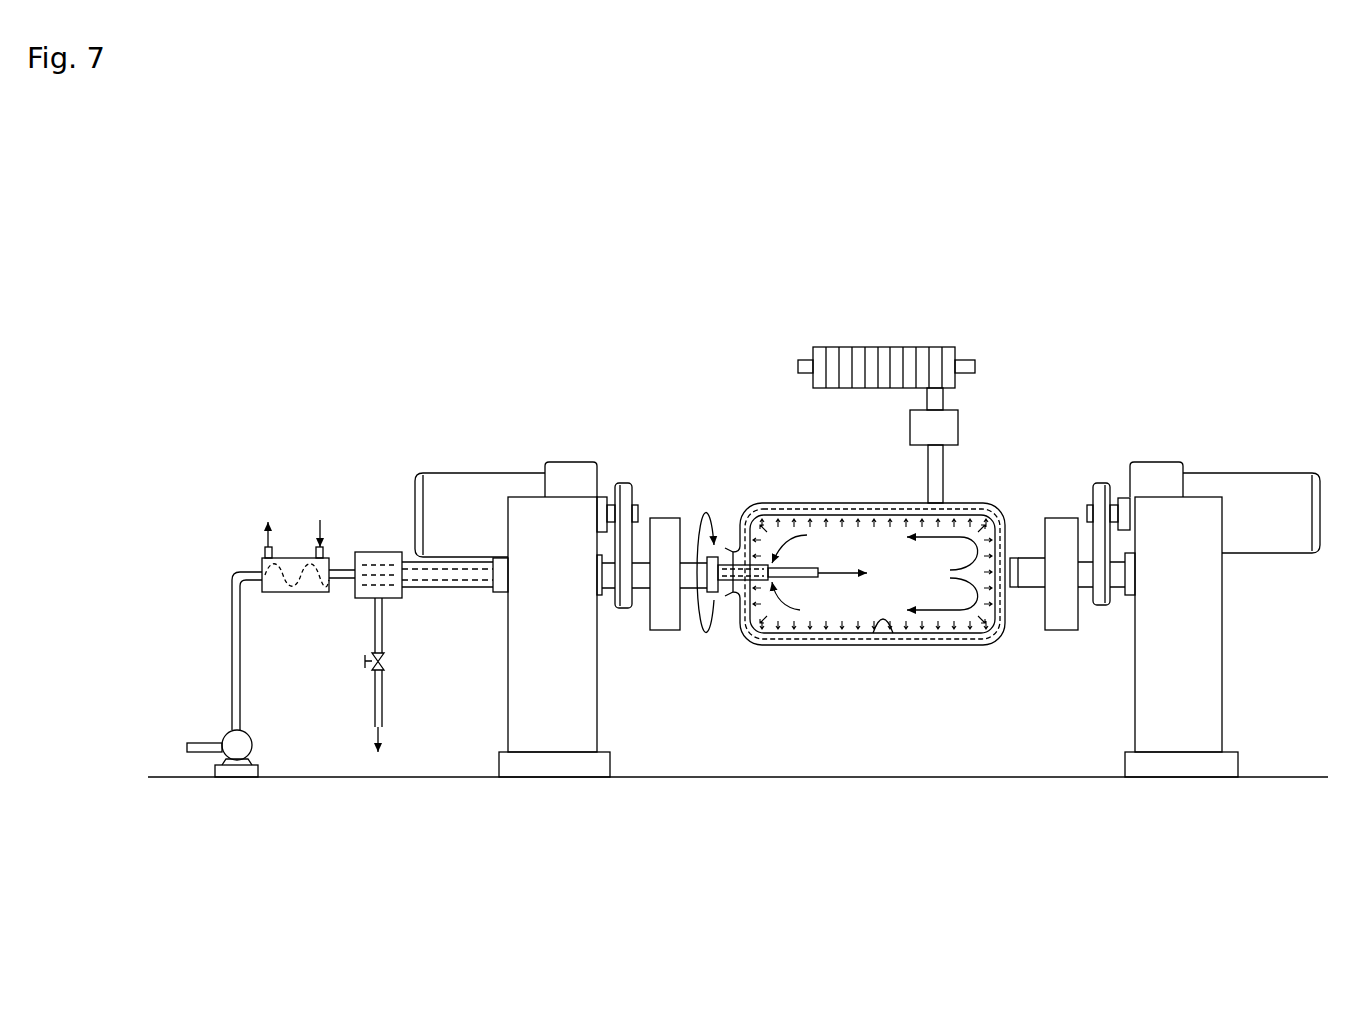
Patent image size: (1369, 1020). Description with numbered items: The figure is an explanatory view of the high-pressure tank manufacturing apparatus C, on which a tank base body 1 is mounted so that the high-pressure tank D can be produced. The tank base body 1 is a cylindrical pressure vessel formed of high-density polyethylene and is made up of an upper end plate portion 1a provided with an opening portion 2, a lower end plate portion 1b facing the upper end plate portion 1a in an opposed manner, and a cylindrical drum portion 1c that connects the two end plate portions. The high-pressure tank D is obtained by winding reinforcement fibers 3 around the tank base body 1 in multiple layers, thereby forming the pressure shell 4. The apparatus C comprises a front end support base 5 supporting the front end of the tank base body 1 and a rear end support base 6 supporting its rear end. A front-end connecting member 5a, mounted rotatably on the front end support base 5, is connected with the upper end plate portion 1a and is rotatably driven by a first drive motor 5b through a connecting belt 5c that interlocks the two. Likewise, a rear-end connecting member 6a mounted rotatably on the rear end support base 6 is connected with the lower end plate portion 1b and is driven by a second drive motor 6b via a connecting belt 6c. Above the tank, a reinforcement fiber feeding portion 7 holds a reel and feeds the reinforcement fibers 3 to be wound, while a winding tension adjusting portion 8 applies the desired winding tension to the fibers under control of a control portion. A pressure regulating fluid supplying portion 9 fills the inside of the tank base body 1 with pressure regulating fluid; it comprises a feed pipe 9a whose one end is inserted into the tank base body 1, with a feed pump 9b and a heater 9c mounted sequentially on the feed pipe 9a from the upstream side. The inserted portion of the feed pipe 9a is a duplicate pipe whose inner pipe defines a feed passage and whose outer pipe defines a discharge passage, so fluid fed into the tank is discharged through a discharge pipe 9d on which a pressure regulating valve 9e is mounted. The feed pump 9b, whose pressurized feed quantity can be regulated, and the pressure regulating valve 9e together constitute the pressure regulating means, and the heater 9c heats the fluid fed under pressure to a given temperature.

The tank base body 1 is at (760, 503).
The upper end plate portion 1a is at (735, 594).
The lower end plate portion 1b is at (1010, 597).
The cylindrical drum portion 1c is at (887, 615).
The opening portion 2 is at (718, 594).
The reinforcement fibers 3 is at (937, 473).
The pressure shell 4 is at (810, 503).
The front end support base 5 is at (570, 648).
The front-end connecting member 5a is at (665, 623).
The first drive motor 5b is at (458, 490).
The connecting belt 5c is at (620, 483).
The rear end support base 6 is at (1158, 648).
The rear-end connecting member 6a is at (1063, 618).
The second drive motor 6b is at (1260, 485).
The connecting belt 6c is at (1107, 480).
The reinforcement fiber feeding portion 7 is at (942, 332).
The winding tension adjusting portion 8 is at (950, 425).
The pressure regulating fluid supplying portion 9 is at (218, 512).
The feed pipe 9a is at (762, 583).
The feed pump 9b is at (240, 745).
The heater 9c is at (300, 592).
The discharge pipe 9d is at (415, 662).
The pressure regulating valve 9e is at (383, 628).
The high-pressure tank manufacturing apparatus C is at (488, 387).
The high-pressure tank D is at (742, 515).